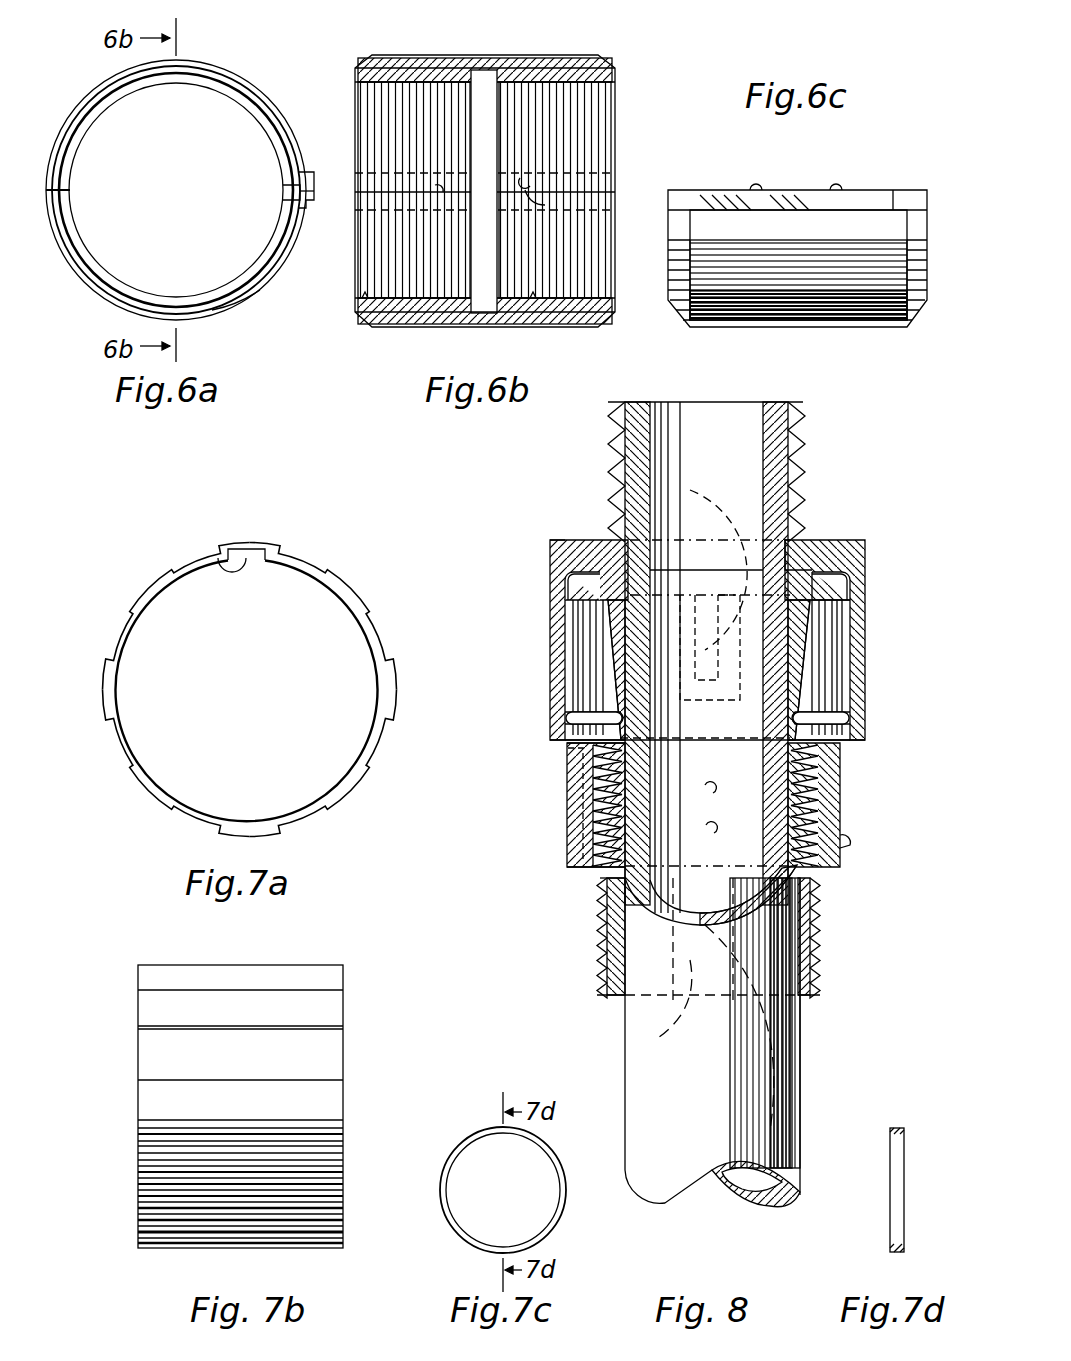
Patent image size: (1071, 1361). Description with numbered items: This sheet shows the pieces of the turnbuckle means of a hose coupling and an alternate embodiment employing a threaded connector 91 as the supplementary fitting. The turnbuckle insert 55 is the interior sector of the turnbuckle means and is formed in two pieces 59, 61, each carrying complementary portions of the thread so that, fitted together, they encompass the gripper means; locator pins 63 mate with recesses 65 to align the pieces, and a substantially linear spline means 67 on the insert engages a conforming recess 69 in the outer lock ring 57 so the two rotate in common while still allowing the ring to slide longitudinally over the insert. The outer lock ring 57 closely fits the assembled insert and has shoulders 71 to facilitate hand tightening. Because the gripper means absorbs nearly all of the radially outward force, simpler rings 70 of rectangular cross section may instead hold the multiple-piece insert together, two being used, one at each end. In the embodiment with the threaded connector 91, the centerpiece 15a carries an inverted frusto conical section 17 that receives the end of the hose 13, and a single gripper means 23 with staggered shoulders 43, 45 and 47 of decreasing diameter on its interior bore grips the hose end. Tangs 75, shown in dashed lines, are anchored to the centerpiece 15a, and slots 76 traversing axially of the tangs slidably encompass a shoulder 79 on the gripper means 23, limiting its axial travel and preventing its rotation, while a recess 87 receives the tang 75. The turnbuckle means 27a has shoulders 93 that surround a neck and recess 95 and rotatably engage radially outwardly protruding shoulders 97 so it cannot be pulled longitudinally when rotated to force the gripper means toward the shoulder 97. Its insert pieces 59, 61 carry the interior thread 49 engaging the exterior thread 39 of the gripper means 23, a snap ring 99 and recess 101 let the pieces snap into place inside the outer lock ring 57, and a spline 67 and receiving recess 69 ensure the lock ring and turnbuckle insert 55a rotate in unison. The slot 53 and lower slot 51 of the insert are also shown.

In FIG. 8, the hose 13 is at (800, 690).
In FIG. 8, the centerpiece 15a is at (822, 585).
In FIG. 8, the inverted frusto conical section 17 is at (805, 625).
In FIG. 8, the gripper means 23 is at (828, 948).
In FIG. 8, the turnbuckle means 27a is at (518, 640).
In FIG. 8, the external thread 39 is at (820, 995).
In FIG. 8, the shoulder 43 is at (600, 945).
In FIG. 8, the additional shoulder 45 is at (600, 988).
In FIG. 8, the additional shoulder 47 is at (625, 1005).
In FIG. 6b, the interior thread 49 is at (400, 278).
In FIG. 8, the interior thread 49 is at (610, 890).
In FIG. 6b, the lower slot 51 is at (530, 278).
In FIG. 6b, the slot 53 is at (482, 95).
In FIG. 6a, the turnbuckle insert 55 is at (268, 33).
In FIG. 6b, the turnbuckle insert 55 is at (522, 58).
In FIG. 6c, the turnbuckle insert 55 is at (872, 186).
In FIG. 8, the turnbuckle insert 55a is at (585, 800).
In FIG. 7a, the outer lock ring 57 is at (315, 560).
In FIG. 7b, the outer lock ring 57 is at (103, 975).
In FIG. 8, the outer lock ring 57 is at (570, 610).
In FIG. 6a, the first piece of turnbuckle insert 59 is at (95, 92).
In FIG. 6b, the first piece of turnbuckle insert 59 is at (615, 92).
In FIG. 8, the first piece of turnbuckle insert 59 is at (600, 845).
In FIG. 6a, the second piece of turnbuckle insert 61 is at (235, 300).
In FIG. 6b, the second piece of turnbuckle insert 61 is at (612, 245).
In FIG. 8, the second piece of turnbuckle insert 61 is at (840, 830).
In FIG. 6a, the locator pin 63 is at (300, 197).
In FIG. 6b, the locator pin 63 is at (545, 200).
In FIG. 6c, the locator pin 63 is at (836, 188).
In FIG. 8, the locator pin 63 is at (780, 780).
In FIG. 6a, the mating recess 65 is at (308, 176).
In FIG. 6b, the mating recess 65 is at (527, 185).
In FIG. 8, the mating recess 65 is at (780, 810).
In FIG. 6a, the spline means 67 is at (318, 205).
In FIG. 6b, the spline means 67 is at (420, 185).
In FIG. 8, the spline means 67 is at (580, 690).
In FIG. 7a, the conforming recess 69 is at (232, 565).
In FIG. 8, the conforming recess 69 is at (575, 760).
In FIG. 7c, the ring 70 is at (444, 1176).
In FIG. 7d, the ring 70 is at (905, 1162).
In FIG. 7a, the shoulder 71 is at (130, 595).
In FIG. 8, the tang 75 is at (590, 822).
In FIG. 8, the slot 76 is at (640, 495).
In FIG. 8, the shoulder 79 is at (790, 1030).
In FIG. 8, the recess 87 is at (640, 1040).
In FIG. 8, the threaded connector 91 is at (805, 430).
In FIG. 8, the shoulder 93 is at (835, 548).
In FIG. 8, the neck and recess 95 is at (800, 555).
In FIG. 8, the radially outwardly protruding shoulder 97 is at (590, 555).
In FIG. 8, the snap ring 99 is at (850, 850).
In FIG. 8, the recess 101 is at (815, 700).